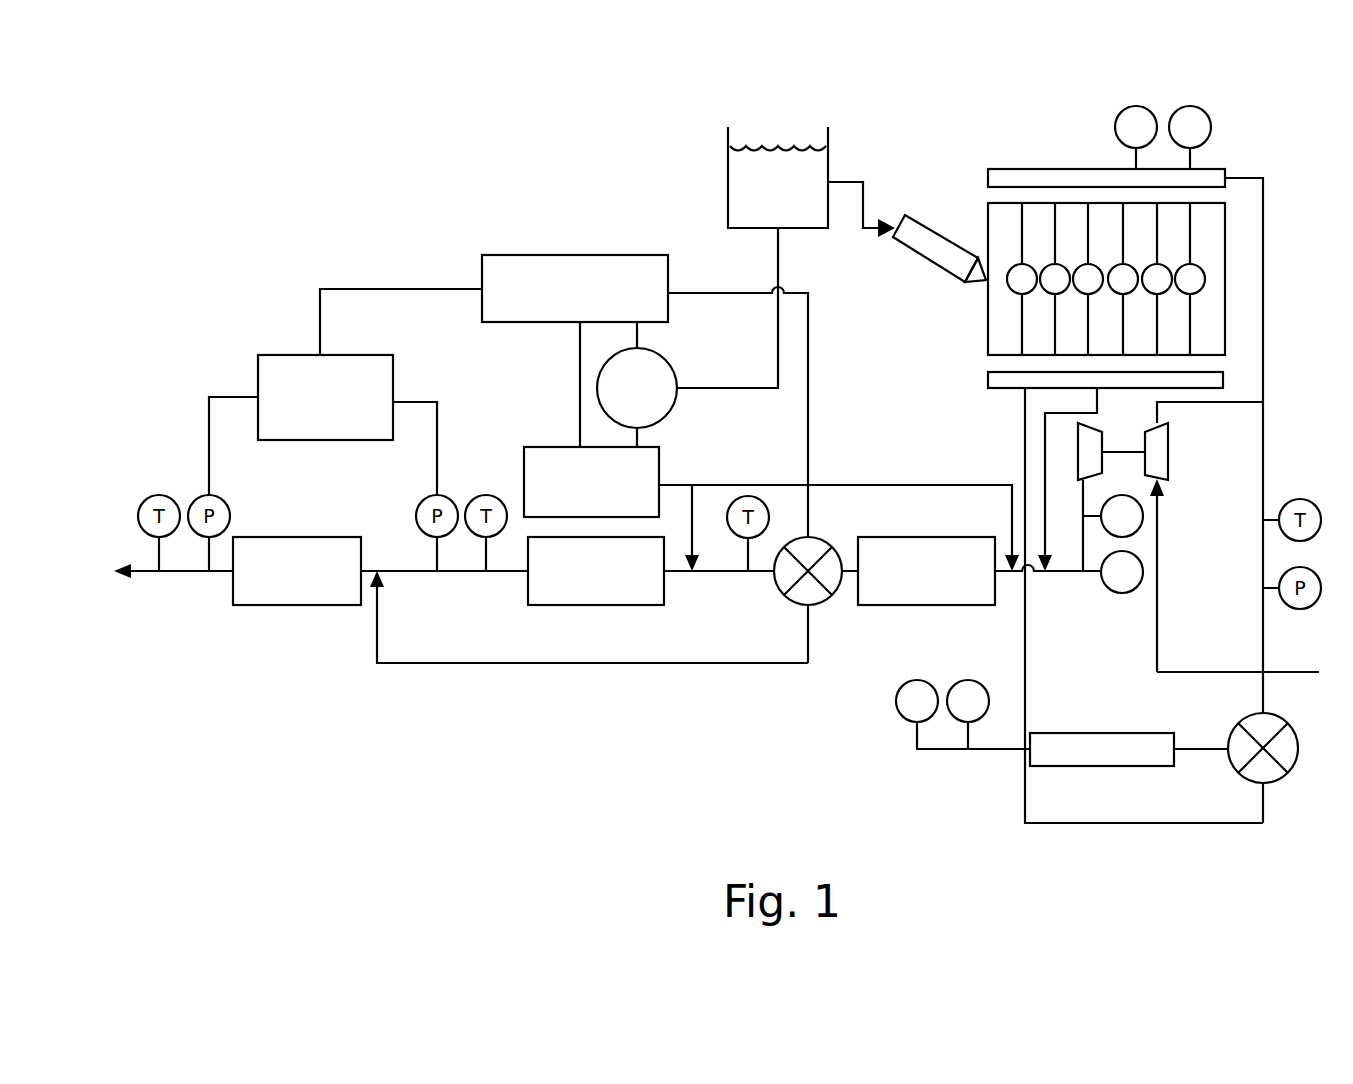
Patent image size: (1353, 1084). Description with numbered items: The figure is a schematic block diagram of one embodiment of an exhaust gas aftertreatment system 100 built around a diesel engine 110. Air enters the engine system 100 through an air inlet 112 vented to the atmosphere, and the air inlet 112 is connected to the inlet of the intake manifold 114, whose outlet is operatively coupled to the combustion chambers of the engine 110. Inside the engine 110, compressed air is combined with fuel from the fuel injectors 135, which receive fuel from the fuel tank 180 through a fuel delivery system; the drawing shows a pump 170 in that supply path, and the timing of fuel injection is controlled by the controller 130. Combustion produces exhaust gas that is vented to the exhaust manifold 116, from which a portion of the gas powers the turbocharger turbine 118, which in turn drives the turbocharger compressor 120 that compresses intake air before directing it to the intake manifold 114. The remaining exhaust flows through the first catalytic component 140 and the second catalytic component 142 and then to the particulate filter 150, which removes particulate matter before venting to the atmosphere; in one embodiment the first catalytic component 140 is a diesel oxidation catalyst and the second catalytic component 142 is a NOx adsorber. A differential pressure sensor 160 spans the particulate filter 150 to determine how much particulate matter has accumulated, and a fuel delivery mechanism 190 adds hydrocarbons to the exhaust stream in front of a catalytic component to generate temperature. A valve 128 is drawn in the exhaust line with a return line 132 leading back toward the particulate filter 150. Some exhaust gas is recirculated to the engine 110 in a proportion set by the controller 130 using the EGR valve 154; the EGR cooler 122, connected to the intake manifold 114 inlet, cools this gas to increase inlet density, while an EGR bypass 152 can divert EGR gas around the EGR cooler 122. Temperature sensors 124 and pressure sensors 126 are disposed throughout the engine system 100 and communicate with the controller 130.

The exhaust gas aftertreatment system 100 is at (280, 135).
The diesel engine 110 is at (1205, 279).
The air inlet 112 is at (1305, 672).
The intake manifold 114 is at (1055, 169).
The exhaust manifold 116 is at (1130, 388).
The turbocharger turbine 118 is at (1080, 478).
The turbocharger compressor 120 is at (1168, 445).
The exhaust gas recirculation (EGR) cooler 122 is at (1095, 766).
The temperature sensors 124 is at (1121, 110).
The pressure sensors 126 is at (1211, 127).
The exhaust valve 128 is at (829, 597).
The controller 130 is at (564, 396).
The bypass line 132 is at (740, 663).
The fuel injectors 135 is at (905, 215).
The first catalytic component 140 is at (935, 605).
The second catalytic component 142 is at (598, 605).
The particulate filter 150 is at (300, 537).
The EGR bypass 152 is at (1185, 823).
The EGR valve 154 is at (1284, 772).
The differential pressure sensor 160 is at (300, 355).
The pump 170 is at (687, 337).
The fuel tank 180 is at (728, 188).
The fuel delivery mechanism 190 is at (545, 447).